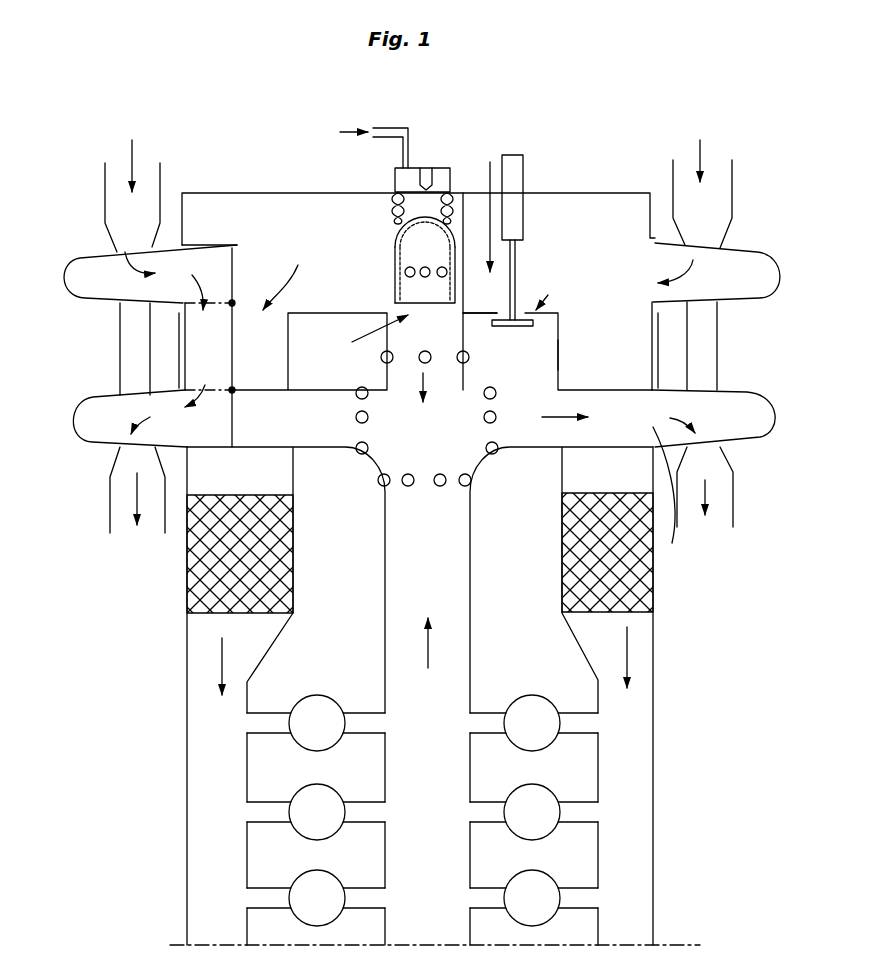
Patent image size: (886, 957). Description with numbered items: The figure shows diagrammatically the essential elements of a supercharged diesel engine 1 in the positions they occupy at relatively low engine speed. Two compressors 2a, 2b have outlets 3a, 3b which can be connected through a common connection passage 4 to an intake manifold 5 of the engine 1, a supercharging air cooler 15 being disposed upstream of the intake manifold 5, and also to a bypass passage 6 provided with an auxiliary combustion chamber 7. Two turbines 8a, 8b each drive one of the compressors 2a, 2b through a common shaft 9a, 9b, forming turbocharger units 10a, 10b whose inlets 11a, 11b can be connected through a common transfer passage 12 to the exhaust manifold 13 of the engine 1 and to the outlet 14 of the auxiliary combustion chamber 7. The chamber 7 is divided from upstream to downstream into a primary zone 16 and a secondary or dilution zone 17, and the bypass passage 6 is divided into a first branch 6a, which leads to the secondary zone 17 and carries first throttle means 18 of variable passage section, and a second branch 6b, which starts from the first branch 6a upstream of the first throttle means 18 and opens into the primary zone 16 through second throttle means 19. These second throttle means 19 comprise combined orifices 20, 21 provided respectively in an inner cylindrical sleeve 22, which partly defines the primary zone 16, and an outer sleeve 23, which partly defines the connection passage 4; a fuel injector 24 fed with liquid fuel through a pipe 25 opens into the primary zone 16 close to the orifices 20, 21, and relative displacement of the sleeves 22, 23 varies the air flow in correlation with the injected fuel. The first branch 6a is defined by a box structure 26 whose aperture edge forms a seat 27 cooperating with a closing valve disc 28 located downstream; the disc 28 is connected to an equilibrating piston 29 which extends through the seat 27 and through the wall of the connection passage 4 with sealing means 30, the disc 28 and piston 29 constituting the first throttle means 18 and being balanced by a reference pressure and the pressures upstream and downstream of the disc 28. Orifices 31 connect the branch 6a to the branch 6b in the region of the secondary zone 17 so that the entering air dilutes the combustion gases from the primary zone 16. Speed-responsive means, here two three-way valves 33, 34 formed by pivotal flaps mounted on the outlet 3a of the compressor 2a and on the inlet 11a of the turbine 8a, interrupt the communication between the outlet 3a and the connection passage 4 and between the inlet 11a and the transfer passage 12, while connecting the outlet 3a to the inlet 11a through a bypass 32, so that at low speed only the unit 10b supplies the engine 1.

The supercharged diesel engine 1 is at (670, 735).
The compressor 2a is at (98, 288).
The compressor 2b is at (740, 267).
The compressor outlet 3a is at (182, 265).
The compressor outlet 3b is at (655, 262).
The connection passage 4 is at (263, 233).
The intake manifold 5 is at (188, 757).
The bypass passage 6 is at (487, 205).
The first branch 6a is at (560, 353).
The second branch 6b is at (393, 296).
The auxiliary combustion chamber 7 is at (320, 351).
The turbine 8a is at (95, 425).
The turbine 8b is at (758, 430).
The common shaft 9a is at (130, 377).
The common shaft 9b is at (713, 377).
The turbocharger unit 10a is at (117, 351).
The turbocharger unit 10b is at (732, 337).
The turbine inlet 11a is at (182, 418).
The turbine inlet 11b is at (693, 496).
The transfer passage 12 is at (415, 439).
The exhaust manifold 13 is at (385, 648).
The outlet of auxiliary combustion chamber 14 is at (412, 383).
The supercharging air cooler 15 is at (287, 562).
The primary zone 16 is at (417, 300).
The secondary or dilution zone 17 is at (436, 385).
The first throttle means 18 is at (549, 328).
The second throttle means 19 is at (388, 272).
The orifice 20 is at (452, 260).
The orifice 21 is at (460, 270).
The inner cylindrical sleeve 22 is at (392, 210).
The outer sleeve 23 is at (468, 192).
The fuel injector 24 is at (420, 215).
The pipe 25 is at (388, 124).
The box structure 26 is at (560, 329).
The seat 27 is at (493, 320).
The closing valve disc 28 is at (528, 327).
The equilibrating piston 29 is at (519, 173).
The sealing means 30 is at (525, 207).
The orifices 31 is at (395, 349).
The bypass 32 is at (199, 354).
The three-way valve 33 is at (232, 281).
The three-way valve 34 is at (233, 412).